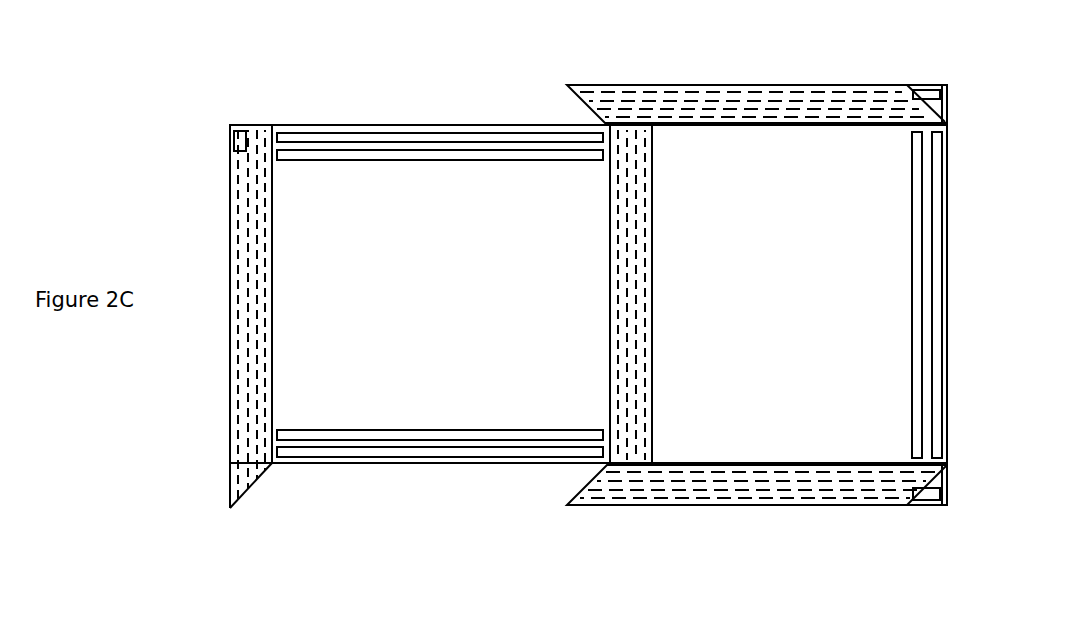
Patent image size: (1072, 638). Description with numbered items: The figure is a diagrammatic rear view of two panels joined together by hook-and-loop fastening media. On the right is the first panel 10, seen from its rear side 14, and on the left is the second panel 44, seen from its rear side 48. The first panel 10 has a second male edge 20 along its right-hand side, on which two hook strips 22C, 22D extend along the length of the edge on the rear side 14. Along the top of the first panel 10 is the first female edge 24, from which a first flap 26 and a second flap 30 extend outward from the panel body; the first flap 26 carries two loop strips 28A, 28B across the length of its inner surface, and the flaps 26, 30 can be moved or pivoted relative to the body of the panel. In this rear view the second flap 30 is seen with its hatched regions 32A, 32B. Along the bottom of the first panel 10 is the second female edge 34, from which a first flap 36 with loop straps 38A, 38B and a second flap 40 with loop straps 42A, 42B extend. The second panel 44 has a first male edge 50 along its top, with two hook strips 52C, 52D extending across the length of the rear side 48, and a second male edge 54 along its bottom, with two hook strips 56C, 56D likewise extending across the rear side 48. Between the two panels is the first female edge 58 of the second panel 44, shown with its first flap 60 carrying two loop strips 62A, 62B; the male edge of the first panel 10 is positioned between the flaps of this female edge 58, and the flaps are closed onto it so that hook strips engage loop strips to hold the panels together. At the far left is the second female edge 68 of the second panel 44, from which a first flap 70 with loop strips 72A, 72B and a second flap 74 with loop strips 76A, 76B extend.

The panel 10 is at (832, 542).
The rear side 14 is at (799, 307).
The second male edge 20 is at (947, 247).
The hook strip 22C is at (937, 357).
The hook strip 22D is at (918, 315).
The first female edge 24 is at (900, 125).
The first flap 26 is at (935, 95).
The loop strip 28A is at (943, 85).
The loop strip 28B is at (950, 107).
The second flap 30 is at (885, 85).
The top foam seal 32A is at (720, 95).
The top foam seal 32B is at (750, 115).
The second female edge 34 is at (802, 465).
The first flap 36 is at (930, 502).
The loop strap 38A is at (940, 503).
The loop strap 38B is at (950, 503).
The second flap 40 is at (673, 505).
The loop strap 42A is at (738, 493).
The loop strap 42B is at (767, 477).
The second panel 44 is at (228, 530).
The rear side 48 is at (453, 308).
The first male edge 50 is at (500, 125).
The hook strip 52C is at (455, 135).
The hook strip 52D is at (425, 157).
The second male edge 54 is at (358, 467).
The hook strip 56C is at (433, 453).
The hook strip 56D is at (478, 435).
The first female edge 58 is at (610, 205).
The first flap 60 is at (652, 223).
The loop strip 62A is at (638, 310).
The loop strip 62B is at (622, 333).
The second female edge 68 is at (272, 328).
The first flap 70 is at (242, 130).
The loop strip 72A is at (270, 128).
The loop strip 72B is at (250, 124).
The second flap 74 is at (250, 483).
The loop strip 76A is at (238, 362).
The loop strip 76B is at (268, 252).